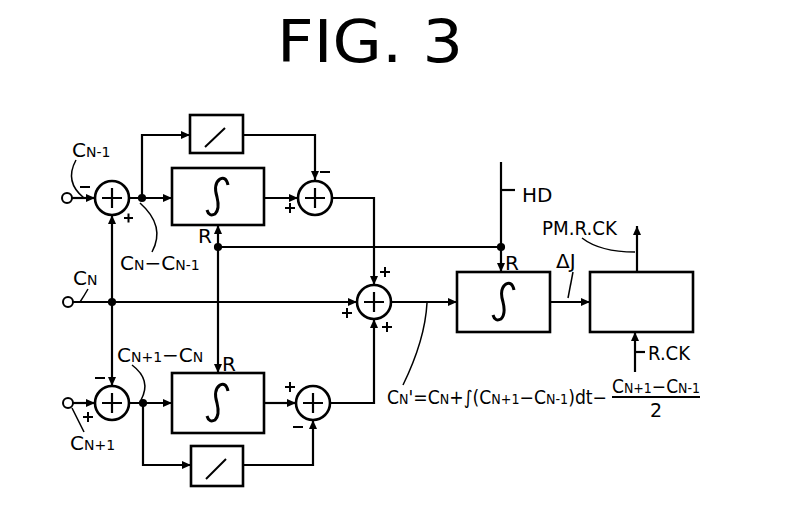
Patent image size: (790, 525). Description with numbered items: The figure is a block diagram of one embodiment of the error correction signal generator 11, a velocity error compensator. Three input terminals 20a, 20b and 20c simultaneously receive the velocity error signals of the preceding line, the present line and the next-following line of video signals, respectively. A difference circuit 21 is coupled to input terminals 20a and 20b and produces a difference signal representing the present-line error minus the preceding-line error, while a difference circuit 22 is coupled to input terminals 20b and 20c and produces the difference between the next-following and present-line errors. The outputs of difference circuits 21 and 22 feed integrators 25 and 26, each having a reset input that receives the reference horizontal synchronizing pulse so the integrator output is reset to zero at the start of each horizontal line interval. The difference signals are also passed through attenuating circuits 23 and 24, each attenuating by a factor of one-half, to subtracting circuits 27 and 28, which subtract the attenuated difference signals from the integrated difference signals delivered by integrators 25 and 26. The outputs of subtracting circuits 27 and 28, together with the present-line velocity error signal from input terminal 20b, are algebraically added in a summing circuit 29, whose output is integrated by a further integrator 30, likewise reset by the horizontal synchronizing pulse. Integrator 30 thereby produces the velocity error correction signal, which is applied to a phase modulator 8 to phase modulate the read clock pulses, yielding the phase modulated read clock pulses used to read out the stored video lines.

The phase modulator 8 is at (682, 287).
The error correction signal generator 11 is at (419, 113).
The input terminal 20a is at (70, 203).
The input terminal 20b is at (70, 306).
The input terminal 20c is at (69, 398).
The difference circuit 21 is at (116, 181).
The difference circuit 22 is at (117, 418).
The attenuating circuit 23 is at (217, 122).
The attenuating circuit 24 is at (243, 475).
The integrator 25 is at (253, 208).
The integrator 26 is at (243, 378).
The subtracting circuit 27 is at (329, 189).
The subtracting circuit 28 is at (327, 409).
The summing circuit 29 is at (360, 290).
The integrator 30 is at (481, 334).